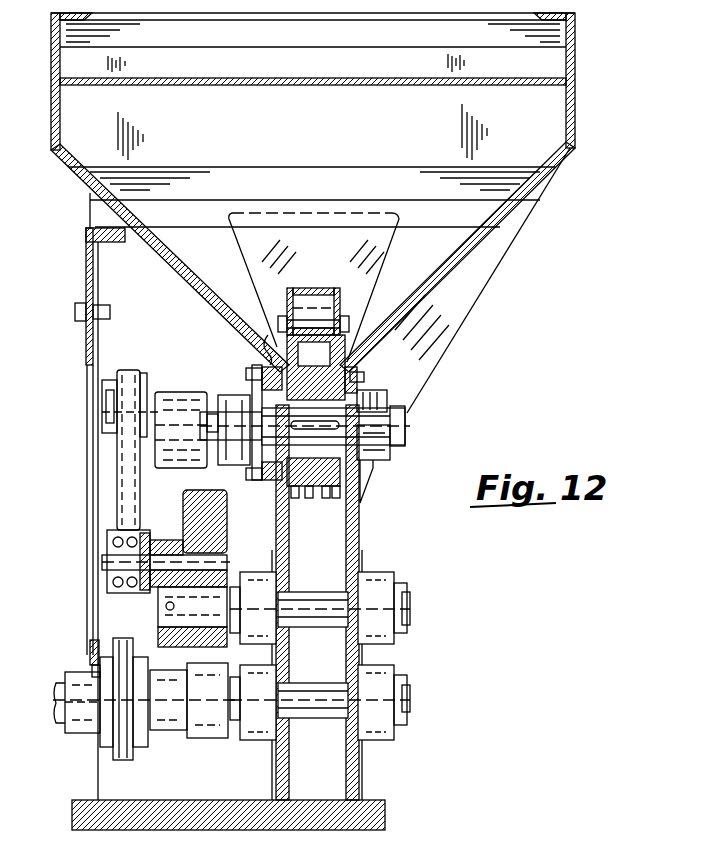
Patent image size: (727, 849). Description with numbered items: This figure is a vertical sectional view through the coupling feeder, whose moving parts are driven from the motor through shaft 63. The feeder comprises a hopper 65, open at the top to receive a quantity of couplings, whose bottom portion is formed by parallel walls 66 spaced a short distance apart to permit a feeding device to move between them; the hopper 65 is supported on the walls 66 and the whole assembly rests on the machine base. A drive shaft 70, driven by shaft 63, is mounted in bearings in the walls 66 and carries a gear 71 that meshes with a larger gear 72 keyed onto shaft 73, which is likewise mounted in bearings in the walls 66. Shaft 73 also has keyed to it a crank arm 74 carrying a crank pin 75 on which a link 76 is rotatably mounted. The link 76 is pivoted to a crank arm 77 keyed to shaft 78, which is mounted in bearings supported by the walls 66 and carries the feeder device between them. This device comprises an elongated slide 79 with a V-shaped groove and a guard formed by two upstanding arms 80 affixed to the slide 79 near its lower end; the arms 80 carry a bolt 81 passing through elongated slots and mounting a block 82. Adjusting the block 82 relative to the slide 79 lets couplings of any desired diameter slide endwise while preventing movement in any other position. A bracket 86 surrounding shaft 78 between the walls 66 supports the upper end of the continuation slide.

The shaft 63 is at (53, 702).
The hopper 65 is at (503, 236).
The parallel walls 66 is at (346, 522).
The drive shaft 70 is at (322, 700).
The gear 71 is at (203, 712).
The larger gear 72 is at (186, 522).
The shaft 73 is at (305, 603).
The crank arm 74 is at (158, 595).
The crank pin 75 is at (108, 561).
The link 76 is at (127, 482).
The crank arm 77 is at (146, 384).
The shaft 78 is at (395, 417).
The elongated slide 79 is at (302, 380).
The upstanding arms 80 is at (287, 300).
The bolt 81 is at (349, 320).
The block 82 is at (268, 347).
The bracket 86 is at (318, 488).